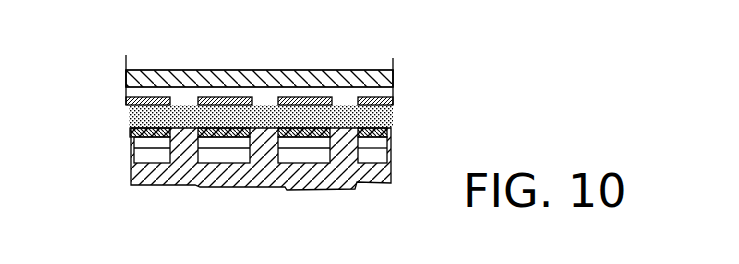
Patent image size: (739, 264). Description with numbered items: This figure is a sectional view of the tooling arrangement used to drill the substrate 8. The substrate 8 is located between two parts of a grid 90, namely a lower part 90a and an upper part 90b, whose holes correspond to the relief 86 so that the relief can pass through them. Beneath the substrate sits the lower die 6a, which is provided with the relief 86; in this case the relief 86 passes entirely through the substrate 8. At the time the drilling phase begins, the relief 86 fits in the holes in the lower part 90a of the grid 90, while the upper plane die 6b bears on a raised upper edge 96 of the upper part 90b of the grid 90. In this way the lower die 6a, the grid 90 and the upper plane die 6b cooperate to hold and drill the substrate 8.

The lower die 6a is at (388, 172).
The upper plane die 6b is at (240, 70).
The substrate 8 is at (133, 115).
The relief 86 is at (222, 157).
The grid 90 is at (319, 105).
The lower part of the grid 90a is at (388, 136).
The upper part of the grid 90b is at (393, 105).
The raised upper edge 96 is at (138, 77).